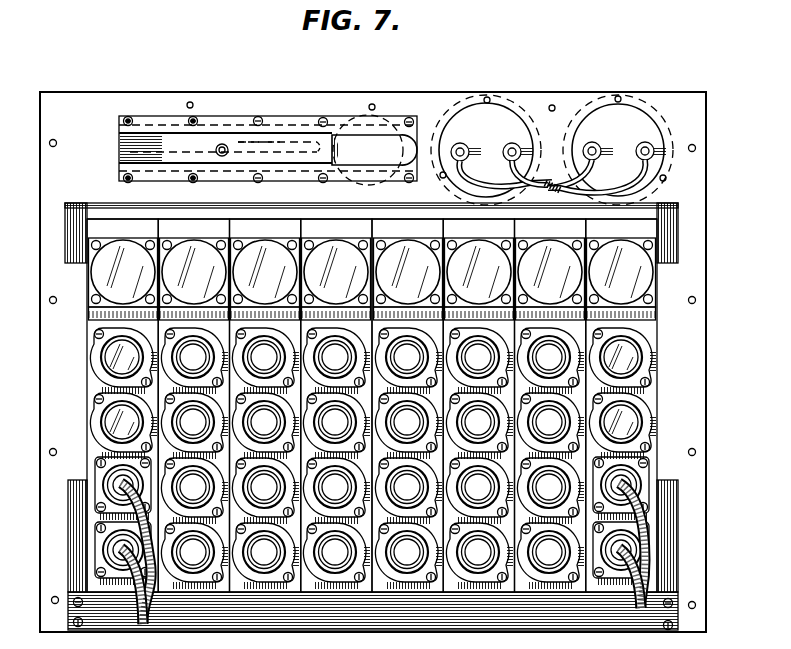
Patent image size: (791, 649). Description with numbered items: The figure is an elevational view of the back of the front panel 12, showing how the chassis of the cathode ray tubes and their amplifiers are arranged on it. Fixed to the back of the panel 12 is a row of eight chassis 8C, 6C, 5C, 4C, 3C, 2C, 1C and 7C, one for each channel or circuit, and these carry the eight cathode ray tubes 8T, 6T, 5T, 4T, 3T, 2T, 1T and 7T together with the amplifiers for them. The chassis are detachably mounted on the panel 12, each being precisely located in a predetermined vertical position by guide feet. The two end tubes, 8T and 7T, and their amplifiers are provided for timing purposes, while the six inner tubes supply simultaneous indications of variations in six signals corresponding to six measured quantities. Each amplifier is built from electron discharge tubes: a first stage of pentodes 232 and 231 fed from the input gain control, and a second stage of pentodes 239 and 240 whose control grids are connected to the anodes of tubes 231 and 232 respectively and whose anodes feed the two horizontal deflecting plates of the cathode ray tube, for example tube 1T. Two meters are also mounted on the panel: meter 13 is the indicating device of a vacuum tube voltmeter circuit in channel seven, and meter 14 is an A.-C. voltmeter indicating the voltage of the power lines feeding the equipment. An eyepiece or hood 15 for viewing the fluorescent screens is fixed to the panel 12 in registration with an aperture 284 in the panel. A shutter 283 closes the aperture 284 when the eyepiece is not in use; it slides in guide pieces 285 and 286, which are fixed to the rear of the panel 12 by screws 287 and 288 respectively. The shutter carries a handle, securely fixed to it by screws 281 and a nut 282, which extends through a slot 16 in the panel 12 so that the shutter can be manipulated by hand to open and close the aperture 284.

The front panel 12 is at (333, 92).
The meter 13 is at (624, 113).
The meter 14 is at (475, 112).
The eyepiece or hood 15 is at (337, 151).
The slot 16 is at (262, 143).
The screws 281 is at (222, 144).
The nut 282 is at (216, 151).
The shutter 283 is at (119, 153).
The aperture 284 is at (420, 128).
The guide piece 285 is at (119, 127).
The guide piece 286 is at (119, 180).
The screws 287 is at (191, 119).
The screws 288 is at (190, 181).
The electron discharge tube 240 is at (372, 361).
The electron discharge tube 239 is at (372, 426).
The electron discharge tube 232 is at (372, 491).
The electron discharge tube 231 is at (372, 556).
The chassis 8C is at (127, 218).
The chassis 6C is at (218, 218).
The chassis 5C is at (287, 218).
The chassis 4C is at (355, 218).
The chassis 3C is at (415, 218).
The chassis 2C is at (456, 218).
The chassis 1C is at (553, 218).
The chassis 7C is at (655, 206).
The cathode ray tube 8T is at (123, 279).
The cathode ray tube 6T is at (194, 279).
The cathode ray tube 5T is at (265, 279).
The cathode ray tube 4T is at (336, 279).
The cathode ray tube 3T is at (408, 279).
The cathode ray tube 2T is at (479, 279).
The cathode ray tube 1T is at (550, 279).
The cathode ray tube 7T is at (621, 279).